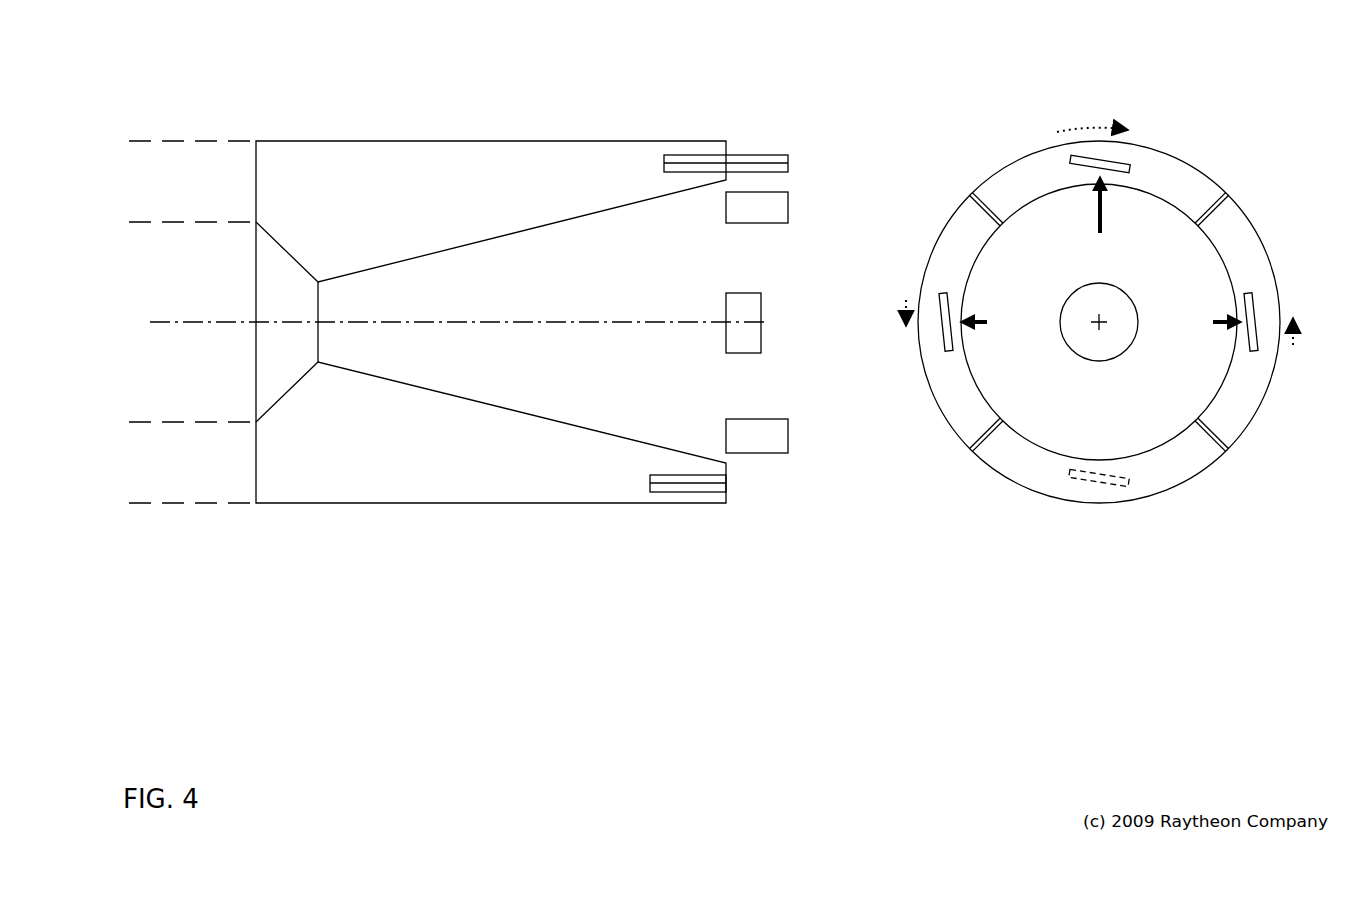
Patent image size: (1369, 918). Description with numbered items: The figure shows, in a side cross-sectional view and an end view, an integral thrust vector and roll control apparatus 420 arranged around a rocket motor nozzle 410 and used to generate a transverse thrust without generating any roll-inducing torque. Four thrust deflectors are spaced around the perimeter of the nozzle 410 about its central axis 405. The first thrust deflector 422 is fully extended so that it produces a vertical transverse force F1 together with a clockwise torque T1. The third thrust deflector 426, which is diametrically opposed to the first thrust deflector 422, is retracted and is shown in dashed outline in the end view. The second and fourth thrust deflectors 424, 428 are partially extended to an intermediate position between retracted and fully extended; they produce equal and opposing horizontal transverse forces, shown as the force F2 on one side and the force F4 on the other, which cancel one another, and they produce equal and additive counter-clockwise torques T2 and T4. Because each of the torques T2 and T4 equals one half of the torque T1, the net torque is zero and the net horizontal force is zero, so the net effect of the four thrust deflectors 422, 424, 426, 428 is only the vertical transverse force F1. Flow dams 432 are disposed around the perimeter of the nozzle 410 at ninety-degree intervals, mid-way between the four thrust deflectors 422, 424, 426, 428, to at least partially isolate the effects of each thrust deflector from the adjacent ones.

The central axis / bore 405 is at (582, 322).
The nozzle 410 is at (643, 440).
The integral thrust vector and roll control apparatus 420 is at (915, 66).
The first thrust deflector 422 is at (788, 155).
The second thrust deflector 424 is at (1253, 300).
The third thrust deflector 426 is at (726, 493).
The fourth thrust deflector 428 is at (938, 292).
The flow dams 432 is at (972, 193).
The vertical transverse force F1 is at (1100, 213).
The force F2 is at (1223, 320).
The horizontal transverse force F4 is at (978, 318).
The clockwise torque T1 is at (1090, 132).
The counter-clockwise torque T2 is at (1293, 343).
The counter-clockwise torque T4 is at (897, 313).